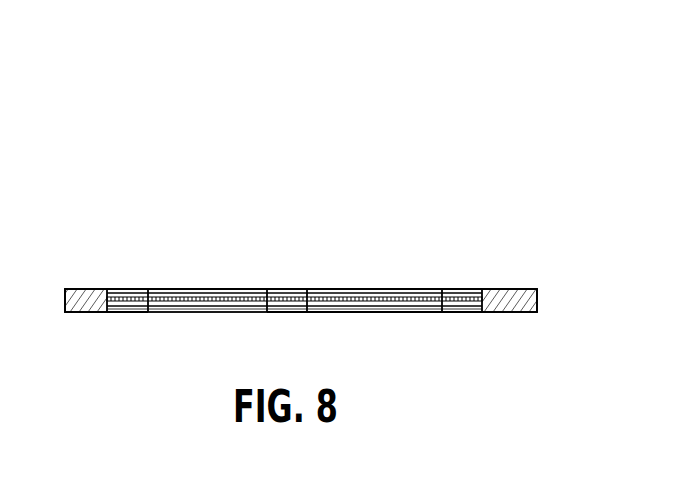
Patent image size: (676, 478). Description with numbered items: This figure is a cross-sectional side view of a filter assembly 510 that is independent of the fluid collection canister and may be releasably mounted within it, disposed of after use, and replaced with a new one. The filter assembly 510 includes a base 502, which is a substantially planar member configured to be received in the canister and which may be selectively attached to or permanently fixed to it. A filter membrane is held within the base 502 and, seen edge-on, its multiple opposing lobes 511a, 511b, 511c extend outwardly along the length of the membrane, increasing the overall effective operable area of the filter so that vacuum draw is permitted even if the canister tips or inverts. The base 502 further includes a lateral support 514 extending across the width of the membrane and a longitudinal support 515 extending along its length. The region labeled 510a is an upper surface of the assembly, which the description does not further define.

The filter assembly 510 is at (348, 244).
The base 502 is at (77, 289).
The top surface of assembly 510a is at (167, 289).
The lobe 511a is at (122, 313).
The lobe 511b is at (287, 313).
The lobe 511c is at (472, 313).
The lateral support 514 is at (153, 313).
The longitudinal support 515 is at (410, 313).